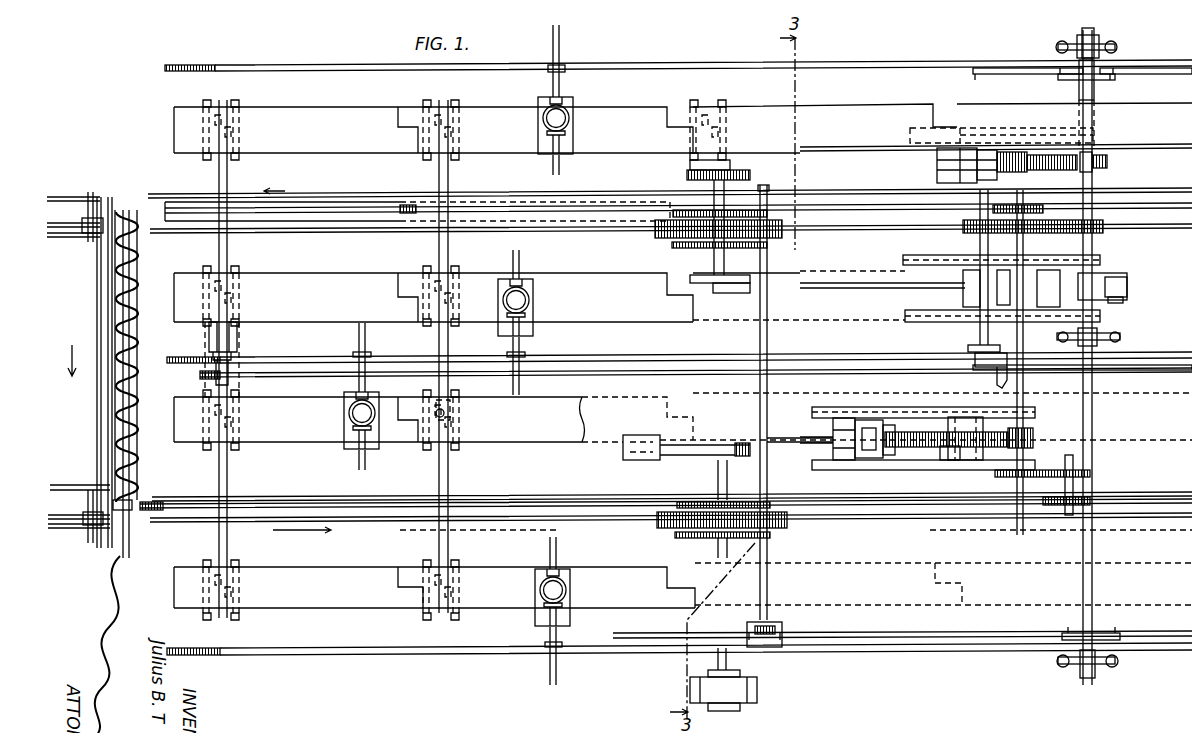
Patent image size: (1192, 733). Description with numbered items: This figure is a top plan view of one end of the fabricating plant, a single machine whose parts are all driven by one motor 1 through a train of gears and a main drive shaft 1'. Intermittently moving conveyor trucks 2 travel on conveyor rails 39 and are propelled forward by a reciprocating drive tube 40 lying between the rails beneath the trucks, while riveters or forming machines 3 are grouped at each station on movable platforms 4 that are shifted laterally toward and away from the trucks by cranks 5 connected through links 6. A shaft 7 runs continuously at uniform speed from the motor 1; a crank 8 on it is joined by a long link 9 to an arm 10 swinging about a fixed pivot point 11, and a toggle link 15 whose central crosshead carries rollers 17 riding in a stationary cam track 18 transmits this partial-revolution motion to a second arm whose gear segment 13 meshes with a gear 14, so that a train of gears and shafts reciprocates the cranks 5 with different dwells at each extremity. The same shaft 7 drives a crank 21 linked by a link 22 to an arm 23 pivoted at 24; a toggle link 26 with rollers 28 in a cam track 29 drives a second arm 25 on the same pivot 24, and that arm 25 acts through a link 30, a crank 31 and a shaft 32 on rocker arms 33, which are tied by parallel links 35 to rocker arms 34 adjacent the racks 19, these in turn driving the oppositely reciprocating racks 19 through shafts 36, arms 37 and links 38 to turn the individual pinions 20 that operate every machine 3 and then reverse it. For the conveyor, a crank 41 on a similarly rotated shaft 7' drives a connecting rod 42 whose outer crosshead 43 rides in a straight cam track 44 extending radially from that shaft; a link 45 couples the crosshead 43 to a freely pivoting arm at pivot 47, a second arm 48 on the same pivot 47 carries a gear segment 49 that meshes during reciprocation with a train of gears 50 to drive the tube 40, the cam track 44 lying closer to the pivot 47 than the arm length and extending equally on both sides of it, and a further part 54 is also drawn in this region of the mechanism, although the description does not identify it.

The motor 1 is at (735, 679).
The main drive shaft 1' is at (750, 402).
The conveyor trucks 2 is at (370, 206).
The riveters or forming machines 3 is at (572, 108).
The movable platforms 4 is at (343, 118).
The cranks 5 is at (225, 305).
The links 6 is at (215, 178).
The shaft 7 is at (700, 227).
The shaft 7' is at (708, 509).
The crank 8 is at (740, 168).
The long link 9 is at (838, 148).
The arm 10 is at (935, 175).
The fixed pivot point 11 is at (1035, 128).
The gear segment 13 is at (1108, 161).
The gear 14 is at (1093, 165).
The toggle link 15 is at (990, 150).
The rollers 17 is at (970, 135).
The stationary cam track 18 is at (1063, 135).
The racks 19 is at (238, 64).
The pinions 20 is at (563, 66).
The crank 21 is at (708, 284).
The link 22 is at (862, 292).
The arm 23 is at (962, 300).
The pivot 24 is at (1002, 323).
The arm 25 is at (1100, 285).
The toggle link 26 is at (1042, 272).
The rollers 28 is at (1012, 256).
The cam track 29 is at (958, 256).
The link 30 is at (1128, 280).
The crank 31 is at (1123, 303).
The shaft 32 is at (1094, 418).
The rocker arms 33 is at (1075, 42).
The rocker arms 34 is at (1100, 42).
The parallel links 35 is at (1057, 45).
The shafts 36 is at (1078, 92).
The arms 37 is at (1105, 80).
The links 38 is at (1005, 75).
The conveyor rails 39 is at (472, 195).
The reciprocating drive tube 40 is at (600, 208).
The crank 41 is at (666, 458).
The connecting rod 42 is at (778, 440).
The crosshead 43 is at (836, 417).
The straight cam track 44 is at (933, 407).
The link 45 is at (866, 420).
The pivot 47 is at (963, 417).
The arm 48 is at (948, 448).
The gear segment 49 is at (990, 432).
The train of gears 50 is at (1040, 207).
The collar 54 is at (912, 430).